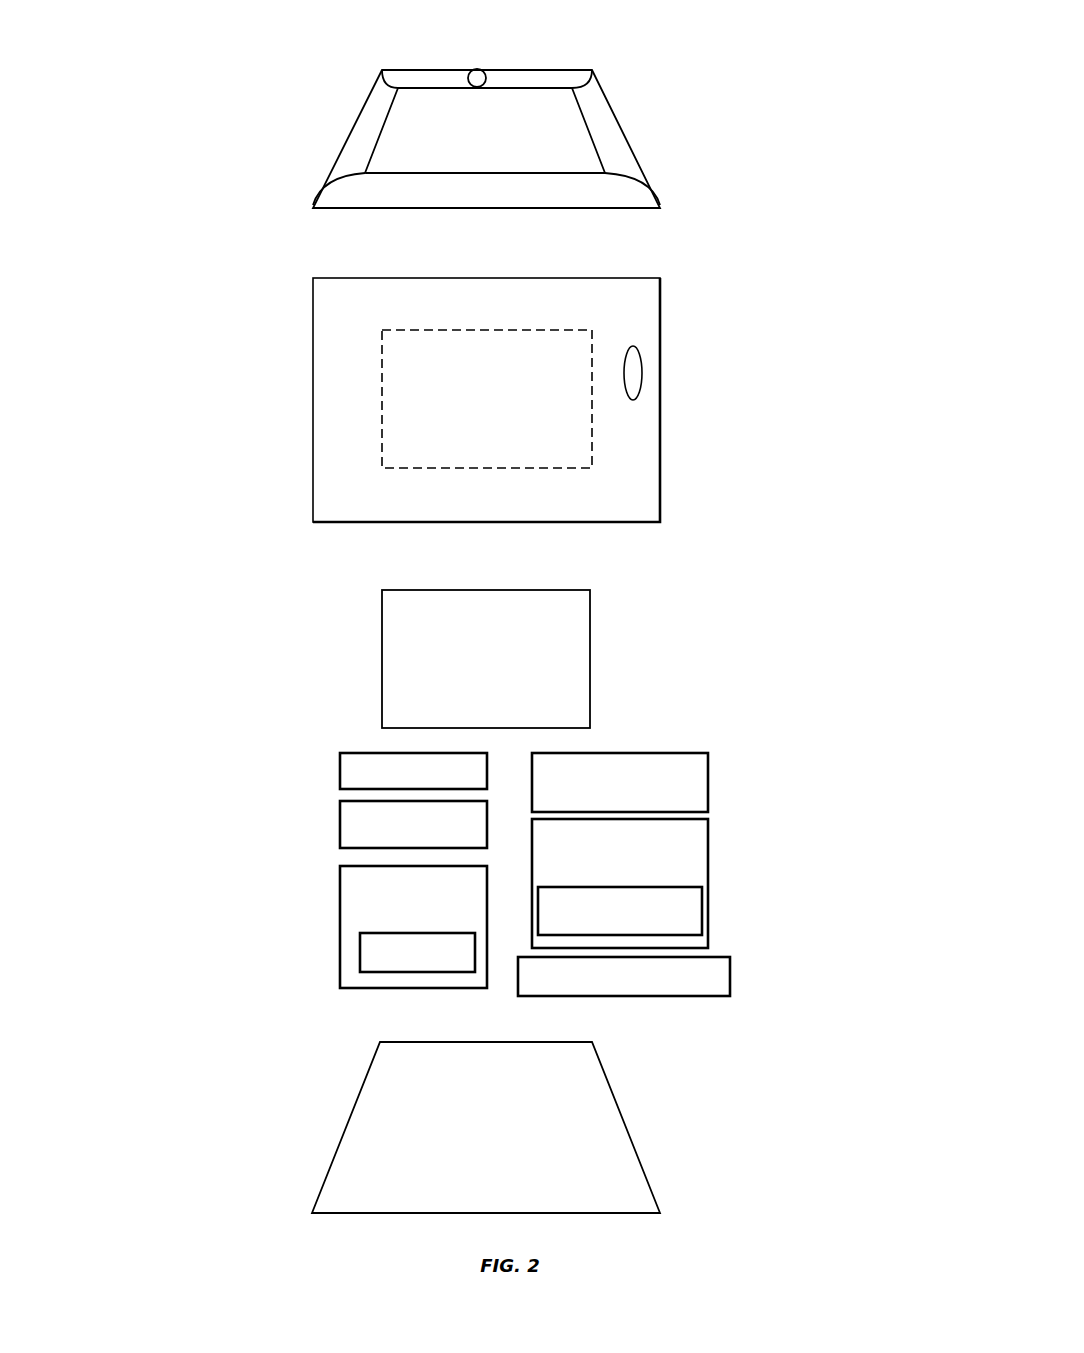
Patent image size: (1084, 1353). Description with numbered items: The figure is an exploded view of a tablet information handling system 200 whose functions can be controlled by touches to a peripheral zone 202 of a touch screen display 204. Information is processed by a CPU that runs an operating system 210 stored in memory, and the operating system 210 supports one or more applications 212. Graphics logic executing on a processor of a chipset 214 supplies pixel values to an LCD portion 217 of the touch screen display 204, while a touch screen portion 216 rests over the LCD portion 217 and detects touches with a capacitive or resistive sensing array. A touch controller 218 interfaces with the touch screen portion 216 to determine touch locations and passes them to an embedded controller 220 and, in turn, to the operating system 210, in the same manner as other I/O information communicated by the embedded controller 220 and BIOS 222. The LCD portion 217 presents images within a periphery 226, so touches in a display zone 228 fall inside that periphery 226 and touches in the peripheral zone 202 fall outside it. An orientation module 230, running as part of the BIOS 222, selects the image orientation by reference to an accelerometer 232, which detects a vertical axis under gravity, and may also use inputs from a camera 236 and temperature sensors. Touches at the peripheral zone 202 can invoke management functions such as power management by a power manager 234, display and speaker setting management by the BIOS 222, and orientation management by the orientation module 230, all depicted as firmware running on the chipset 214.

The tablet information handling system 200 is at (798, 833).
The peripheral zone 202 is at (500, 400).
The touch screen display 204 is at (278, 658).
The operating system 210 is at (192, 835).
The applications 212 is at (258, 877).
The chipset 214 is at (413, 927).
The touch screen portion 216 is at (500, 400).
The LCD portion 217 is at (592, 637).
The touch controller 218 is at (620, 782).
The embedded controller 220 is at (620, 883).
The BIOS 222 is at (417, 952).
The periphery 226 is at (632, 636).
The display zone 228 is at (487, 399).
The orientation module 230 is at (360, 975).
The accelerometer 232 is at (624, 976).
The power manager 234 is at (620, 910).
The camera 236 is at (557, 52).